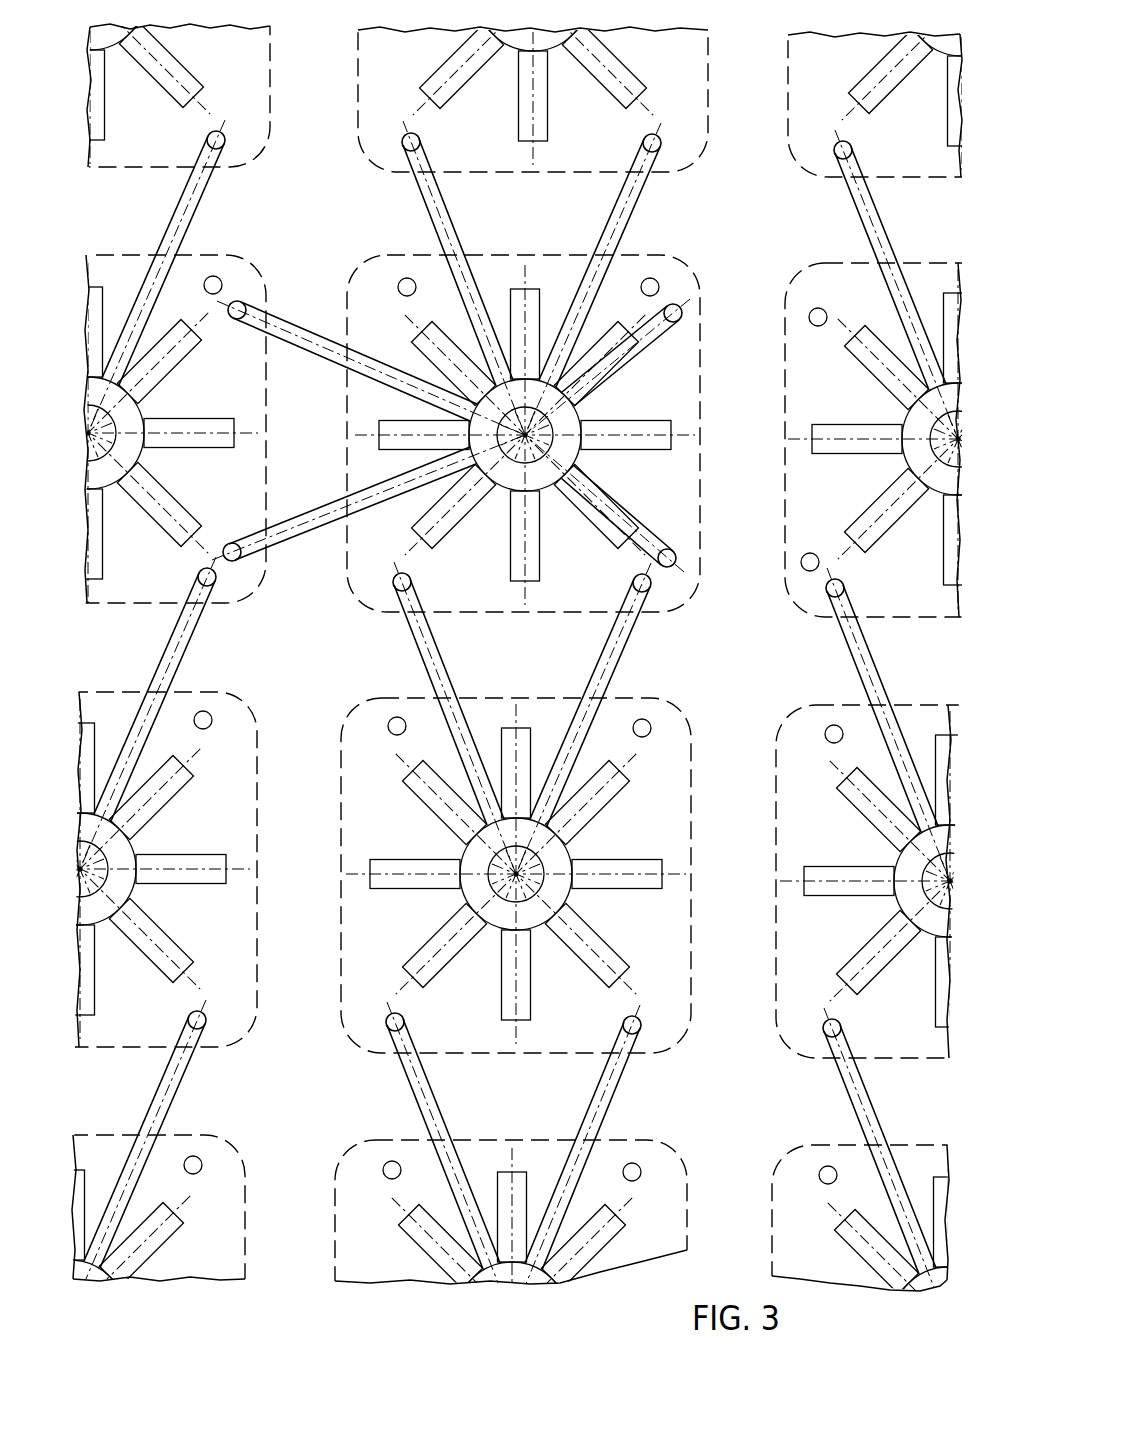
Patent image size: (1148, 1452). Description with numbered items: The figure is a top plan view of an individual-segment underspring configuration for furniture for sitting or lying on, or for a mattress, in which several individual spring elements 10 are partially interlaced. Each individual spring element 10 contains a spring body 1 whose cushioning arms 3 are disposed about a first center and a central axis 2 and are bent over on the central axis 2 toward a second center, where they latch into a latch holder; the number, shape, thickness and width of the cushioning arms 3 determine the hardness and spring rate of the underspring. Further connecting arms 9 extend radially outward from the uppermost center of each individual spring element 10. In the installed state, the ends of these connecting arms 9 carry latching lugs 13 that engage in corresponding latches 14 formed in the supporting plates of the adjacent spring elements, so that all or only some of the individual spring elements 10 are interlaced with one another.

The spring body 1 is at (489, 874).
The central axis 2 is at (513, 875).
The cushioning arms 3 is at (432, 798).
The connecting arms 9 is at (300, 527).
The individual spring element 10 is at (779, 618).
The latching lugs 13 is at (386, 1022).
The latches 14 is at (388, 726).